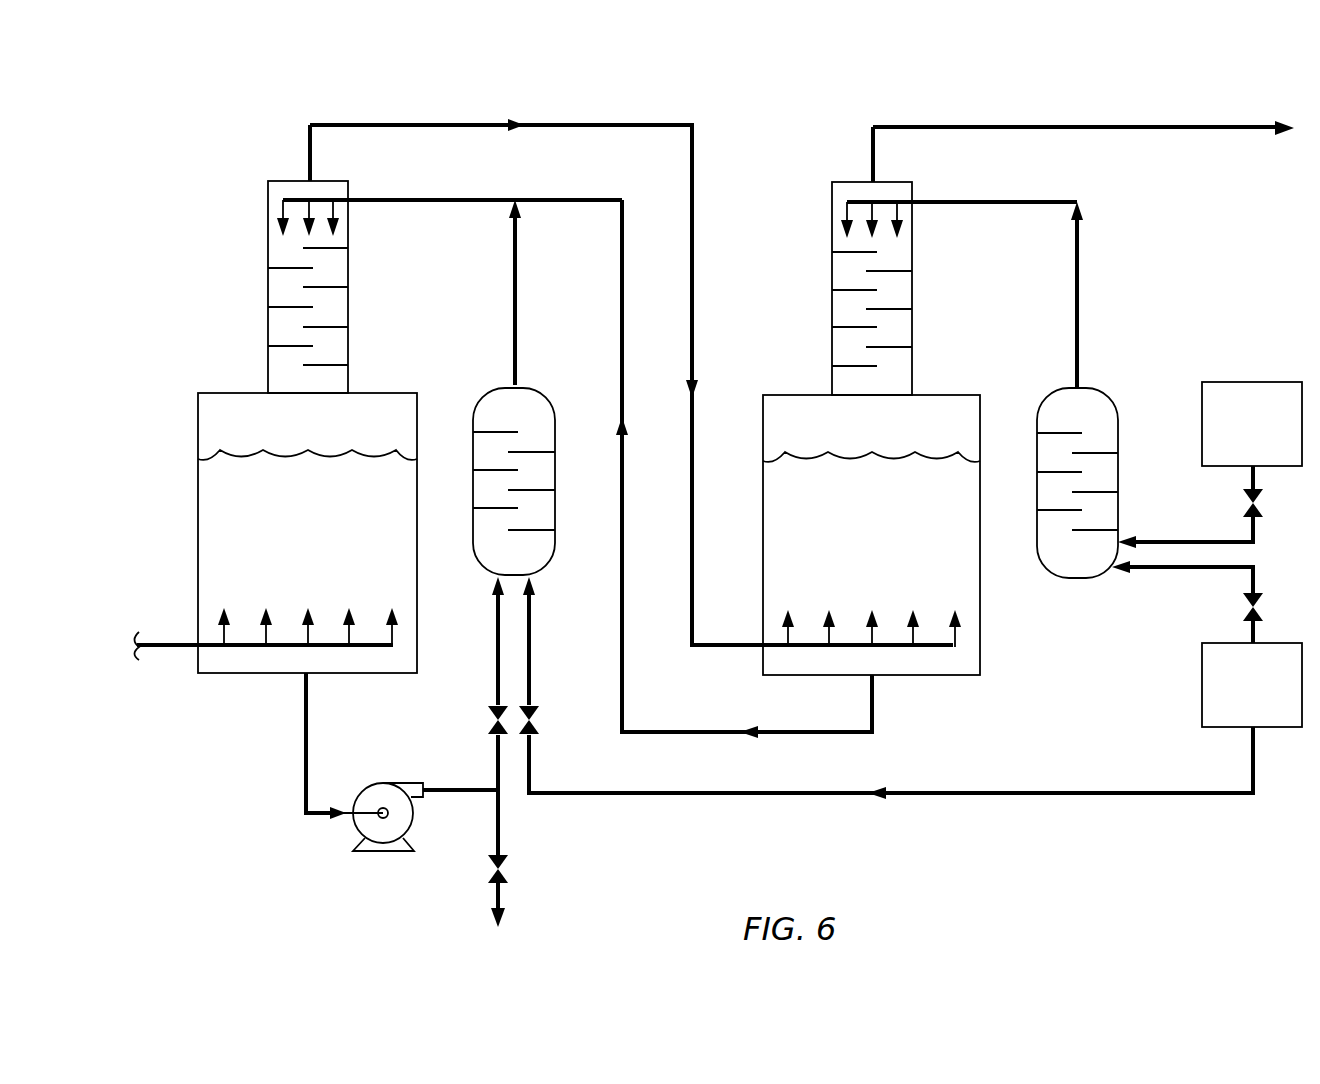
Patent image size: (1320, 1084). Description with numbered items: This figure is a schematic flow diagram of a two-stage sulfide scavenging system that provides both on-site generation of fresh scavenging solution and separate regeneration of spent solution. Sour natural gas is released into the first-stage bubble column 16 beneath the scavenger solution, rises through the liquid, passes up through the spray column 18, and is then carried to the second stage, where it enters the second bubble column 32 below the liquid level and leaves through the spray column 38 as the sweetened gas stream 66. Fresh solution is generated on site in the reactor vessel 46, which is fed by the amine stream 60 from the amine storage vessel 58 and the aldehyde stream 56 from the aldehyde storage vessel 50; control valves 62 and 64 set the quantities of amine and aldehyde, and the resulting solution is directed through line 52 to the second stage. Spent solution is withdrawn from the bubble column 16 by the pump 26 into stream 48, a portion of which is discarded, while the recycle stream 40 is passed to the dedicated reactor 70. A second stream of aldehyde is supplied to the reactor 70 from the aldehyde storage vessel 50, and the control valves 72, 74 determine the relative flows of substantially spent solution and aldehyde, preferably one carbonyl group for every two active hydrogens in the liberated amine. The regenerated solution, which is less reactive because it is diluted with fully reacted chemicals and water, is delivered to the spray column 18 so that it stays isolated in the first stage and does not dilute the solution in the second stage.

The bubble column 16 is at (198, 423).
The spray column 18 is at (268, 269).
The pump 26 is at (408, 784).
The second bubble column 32 is at (807, 395).
The spray column 38 is at (832, 272).
The recycle stream 40 is at (515, 310).
The reactor vessel 46 is at (1055, 390).
The stream 48 is at (503, 897).
The aldehyde storage vessel 50 is at (1252, 673).
The line 52 is at (1077, 311).
The aldehyde stream 56 is at (1212, 570).
The amine storage vessel 58 is at (1252, 436).
The amine stream 60 is at (1223, 540).
The control valve 62 is at (1262, 505).
The control valve 64 is at (1262, 609).
The sweetened gas stream 66 is at (975, 127).
The dedicated reactor 70 is at (495, 388).
The control valve 72 is at (489, 716).
The control valve 74 is at (538, 716).